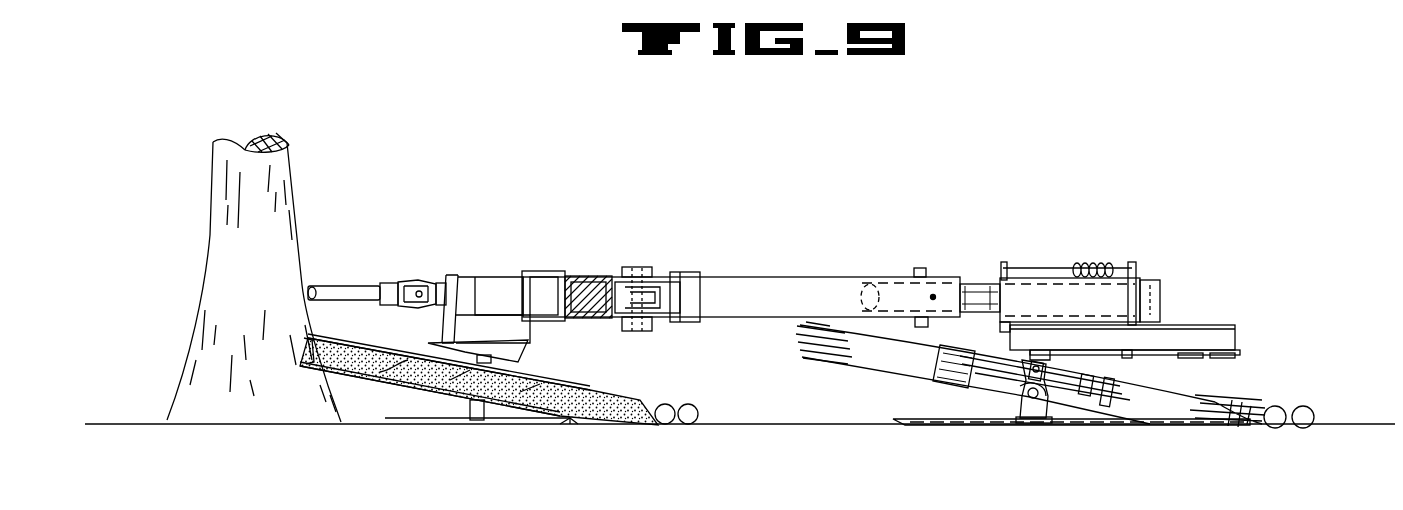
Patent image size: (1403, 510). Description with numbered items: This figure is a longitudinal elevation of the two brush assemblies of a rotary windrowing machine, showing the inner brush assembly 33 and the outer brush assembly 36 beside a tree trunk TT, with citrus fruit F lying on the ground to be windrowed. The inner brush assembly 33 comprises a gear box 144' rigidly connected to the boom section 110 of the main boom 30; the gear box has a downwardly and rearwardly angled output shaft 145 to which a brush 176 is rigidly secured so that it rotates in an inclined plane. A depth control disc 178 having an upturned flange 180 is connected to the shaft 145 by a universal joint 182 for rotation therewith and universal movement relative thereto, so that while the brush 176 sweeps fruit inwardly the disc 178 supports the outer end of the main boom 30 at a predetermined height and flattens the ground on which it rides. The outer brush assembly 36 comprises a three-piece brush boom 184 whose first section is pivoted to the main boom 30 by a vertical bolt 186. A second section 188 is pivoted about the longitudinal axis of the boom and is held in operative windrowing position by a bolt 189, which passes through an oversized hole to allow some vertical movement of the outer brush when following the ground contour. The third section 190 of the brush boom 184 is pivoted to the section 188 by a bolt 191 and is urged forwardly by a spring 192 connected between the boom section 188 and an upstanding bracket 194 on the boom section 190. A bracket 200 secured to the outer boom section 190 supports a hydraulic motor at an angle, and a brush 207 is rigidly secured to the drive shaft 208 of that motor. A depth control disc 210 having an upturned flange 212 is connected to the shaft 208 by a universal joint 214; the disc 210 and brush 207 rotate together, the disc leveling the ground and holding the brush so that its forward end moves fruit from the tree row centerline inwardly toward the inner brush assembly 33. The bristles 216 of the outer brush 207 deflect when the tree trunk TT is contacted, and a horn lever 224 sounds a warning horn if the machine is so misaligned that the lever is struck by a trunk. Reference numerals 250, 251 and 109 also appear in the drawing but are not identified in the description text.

The tree trunk TT is at (290, 155).
The inner brush assembly 33 is at (302, 364).
The rod 250 is at (333, 286).
The universal coupling 251 is at (397, 283).
The boom section 110 is at (490, 283).
The gear box 144' is at (516, 336).
The output shaft 145 is at (493, 362).
The brush boom 184 is at (733, 277).
The collar 109 is at (543, 280).
The main boom 30 is at (593, 278).
The vertical bolt 186 is at (640, 268).
The bolt 189 is at (919, 268).
The second section 188 is at (967, 283).
The spring 192 is at (1091, 264).
The upstanding bracket 194 is at (1137, 282).
The third section 190 is at (1188, 332).
The horn lever 224 is at (1237, 354).
The bracket 200 is at (1010, 332).
The drive shaft 208 is at (1078, 348).
The bolt 191 is at (1132, 355).
The outer brush assembly 36 is at (822, 357).
The brush 207 is at (914, 371).
The universal joint 214 is at (1040, 400).
The upturned flange 212 is at (903, 425).
The depth control disc 210 is at (976, 426).
The bristles 216 is at (1240, 428).
The citrus fruit F is at (1300, 405).
The universal joint 182 is at (440, 390).
The depth control disc 178 is at (477, 421).
The upturned flange 180 is at (388, 424).
The brush 176 is at (603, 420).